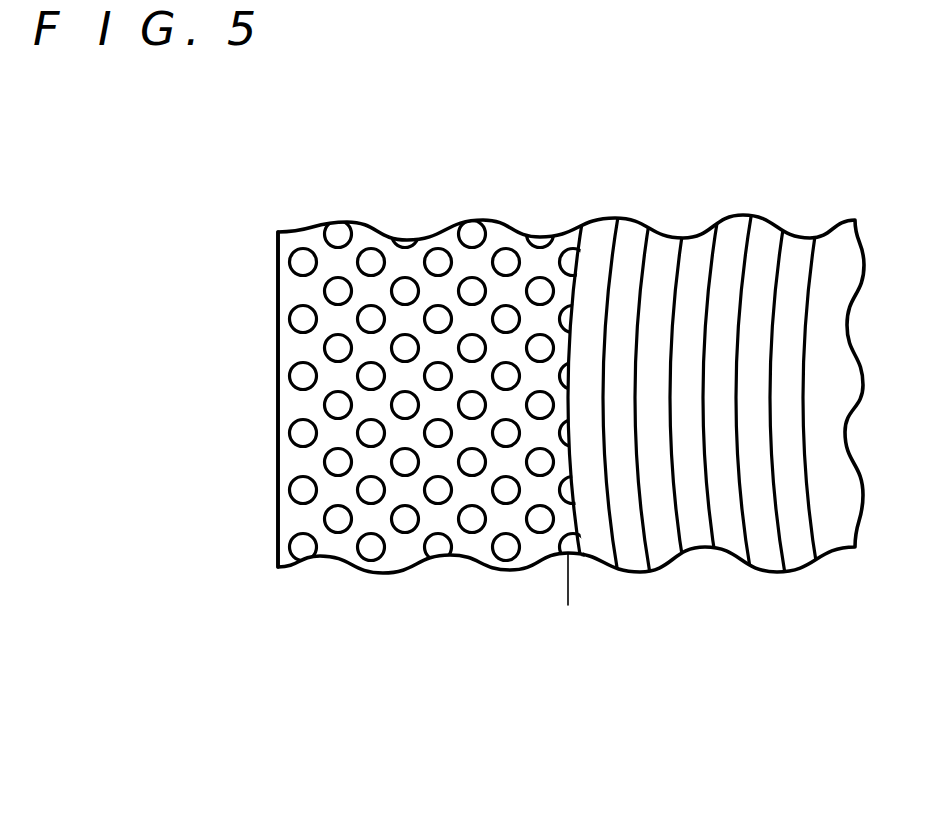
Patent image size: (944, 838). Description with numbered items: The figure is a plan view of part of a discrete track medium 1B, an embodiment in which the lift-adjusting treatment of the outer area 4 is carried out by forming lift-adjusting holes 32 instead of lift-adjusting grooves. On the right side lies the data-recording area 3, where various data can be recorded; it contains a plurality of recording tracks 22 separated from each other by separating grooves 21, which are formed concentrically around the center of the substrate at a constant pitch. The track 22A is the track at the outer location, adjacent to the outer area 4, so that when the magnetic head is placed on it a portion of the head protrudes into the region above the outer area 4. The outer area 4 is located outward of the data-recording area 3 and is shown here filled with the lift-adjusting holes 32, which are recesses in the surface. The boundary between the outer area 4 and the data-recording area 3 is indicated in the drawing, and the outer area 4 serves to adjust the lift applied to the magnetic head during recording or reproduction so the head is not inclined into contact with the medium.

The lift-adjusting holes 32 is at (373, 247).
The outer area 4 is at (399, 385).
The data-recording area 3 is at (715, 379).
The recording tracks 22 is at (663, 236).
The track 22A is at (598, 221).
The grooves 21 is at (715, 364).
The discrete track medium 1B is at (583, 618).